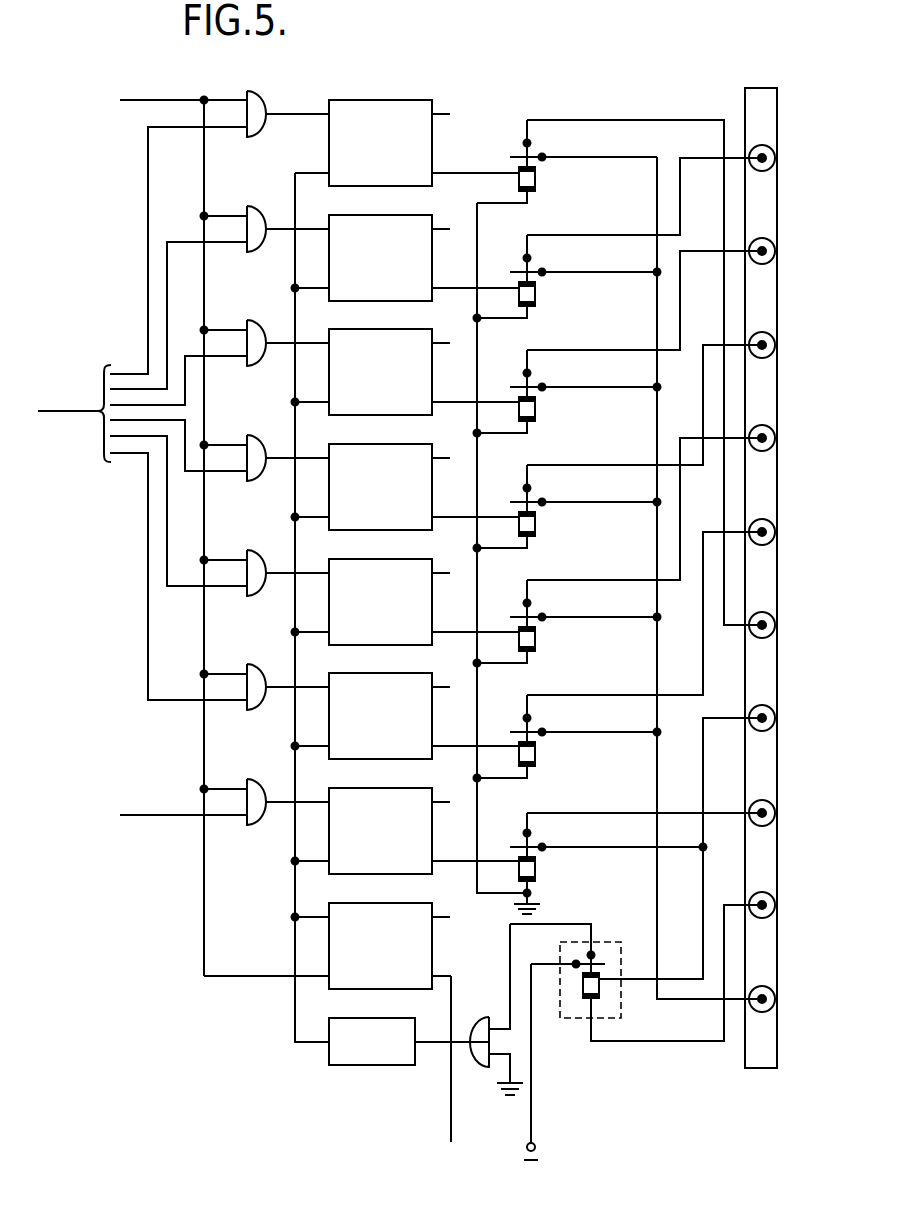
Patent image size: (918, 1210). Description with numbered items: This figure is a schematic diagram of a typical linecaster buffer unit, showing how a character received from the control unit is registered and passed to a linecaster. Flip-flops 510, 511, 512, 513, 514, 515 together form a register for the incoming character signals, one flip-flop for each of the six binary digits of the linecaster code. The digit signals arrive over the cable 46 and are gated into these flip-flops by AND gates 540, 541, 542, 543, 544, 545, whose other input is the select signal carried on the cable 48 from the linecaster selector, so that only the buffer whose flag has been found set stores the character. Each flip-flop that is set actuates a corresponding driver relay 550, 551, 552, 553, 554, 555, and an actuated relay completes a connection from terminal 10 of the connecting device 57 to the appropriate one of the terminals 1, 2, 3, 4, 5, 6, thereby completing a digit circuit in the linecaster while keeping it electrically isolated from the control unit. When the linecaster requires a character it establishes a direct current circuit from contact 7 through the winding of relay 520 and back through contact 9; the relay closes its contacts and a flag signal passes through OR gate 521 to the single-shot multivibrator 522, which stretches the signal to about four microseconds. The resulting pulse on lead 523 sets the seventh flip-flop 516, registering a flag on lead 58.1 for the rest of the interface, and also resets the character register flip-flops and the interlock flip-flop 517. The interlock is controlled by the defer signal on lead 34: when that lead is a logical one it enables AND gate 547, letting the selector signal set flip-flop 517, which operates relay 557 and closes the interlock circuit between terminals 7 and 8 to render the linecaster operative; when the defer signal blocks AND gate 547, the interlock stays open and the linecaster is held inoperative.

The cable 48 is at (139, 99).
The lead 34 is at (134, 813).
The cable 46 is at (60, 410).
The AND gate 540 is at (262, 104).
The AND gate 541 is at (255, 206).
The AND gate 542 is at (255, 320).
The AND gate 543 is at (255, 435).
The AND gate 544 is at (255, 550).
The AND gate 545 is at (255, 664).
The AND gate 547 is at (255, 779).
The flip-flop 510 is at (379, 104).
The flip-flop 511 is at (379, 219).
The flip-flop 512 is at (379, 333).
The flip-flop 513 is at (379, 448).
The flip-flop 514 is at (379, 563).
The flip-flop 515 is at (379, 677).
The flip-flop 516 is at (379, 907).
The flip-flop 517 is at (379, 792).
The driver relay 550 is at (536, 179).
The driver relay 551 is at (536, 294).
The driver relay 552 is at (536, 409).
The driver relay 553 is at (536, 524).
The driver relay 554 is at (536, 639).
The driver relay 555 is at (536, 754).
The relay 557 is at (536, 869).
The relay 520 is at (610, 941).
The OR gate 521 is at (484, 1020).
The single-shot multivibrator 522 is at (371, 1065).
The lead 523 is at (295, 1006).
The lead 58.1 is at (451, 1125).
The connecting device 57 is at (760, 1068).
The terminal 1 is at (775, 158).
The terminal 2 is at (775, 251).
The terminal 3 is at (775, 345).
The terminal 4 is at (775, 438).
The terminal 5 is at (775, 532).
The terminal 6 is at (775, 625).
The contact 7 is at (775, 718).
The terminal 8 is at (775, 813).
The contact 9 is at (775, 905).
The terminal 10 is at (775, 999).